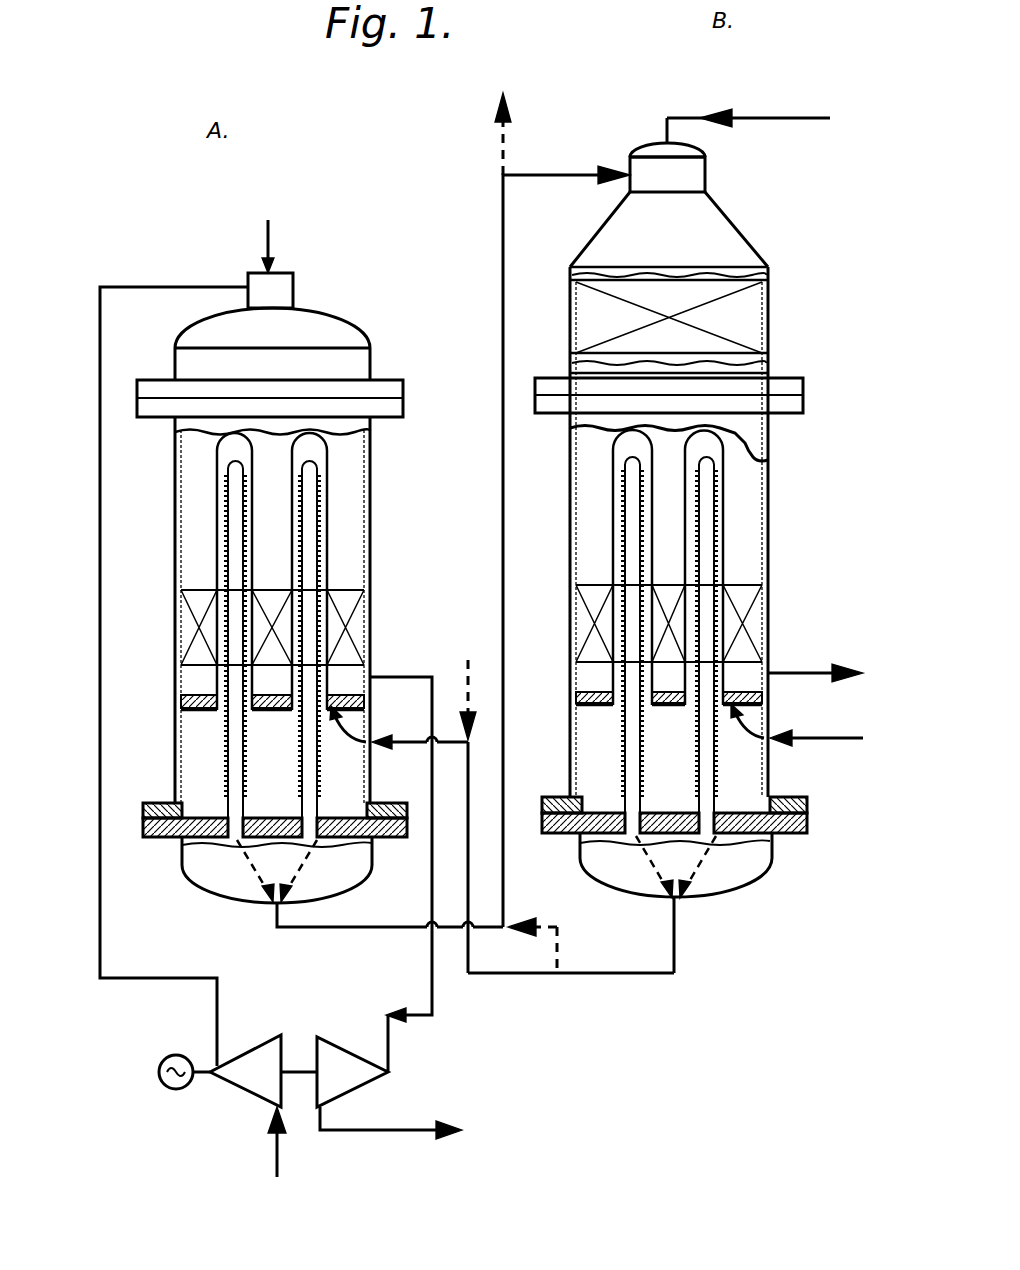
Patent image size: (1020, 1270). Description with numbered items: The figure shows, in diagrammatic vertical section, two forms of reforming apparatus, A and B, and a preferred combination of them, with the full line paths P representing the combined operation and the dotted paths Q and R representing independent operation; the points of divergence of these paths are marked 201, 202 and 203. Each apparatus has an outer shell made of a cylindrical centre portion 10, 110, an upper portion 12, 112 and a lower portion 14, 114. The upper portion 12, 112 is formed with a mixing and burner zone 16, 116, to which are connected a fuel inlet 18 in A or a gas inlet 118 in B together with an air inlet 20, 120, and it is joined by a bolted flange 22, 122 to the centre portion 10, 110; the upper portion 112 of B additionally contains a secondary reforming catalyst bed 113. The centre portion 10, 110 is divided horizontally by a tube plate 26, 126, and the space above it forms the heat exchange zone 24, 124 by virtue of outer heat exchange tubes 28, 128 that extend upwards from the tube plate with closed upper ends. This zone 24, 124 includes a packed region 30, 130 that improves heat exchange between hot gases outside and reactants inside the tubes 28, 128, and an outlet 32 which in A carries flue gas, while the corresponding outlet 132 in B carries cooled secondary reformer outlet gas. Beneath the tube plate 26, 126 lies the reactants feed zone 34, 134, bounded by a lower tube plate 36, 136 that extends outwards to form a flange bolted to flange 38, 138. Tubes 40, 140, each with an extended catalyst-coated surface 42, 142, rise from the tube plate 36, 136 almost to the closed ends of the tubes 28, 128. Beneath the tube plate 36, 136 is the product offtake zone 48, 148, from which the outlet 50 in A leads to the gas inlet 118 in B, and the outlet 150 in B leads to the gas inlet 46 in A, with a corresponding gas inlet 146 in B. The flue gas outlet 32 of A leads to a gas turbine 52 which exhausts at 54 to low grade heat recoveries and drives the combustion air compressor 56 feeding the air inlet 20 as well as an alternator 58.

The cylindrical centre portion 10 is at (358, 440).
The upper portion 12 is at (372, 348).
The lower portion 14 is at (372, 855).
The mixing and burner zone 16 is at (296, 290).
The fuel inlet 18 is at (282, 232).
The air inlet 20 is at (190, 286).
The flange 22 is at (404, 385).
The heat exchange zone 24 is at (363, 440).
The tube plate 26 is at (190, 694).
The outer heat exchange tubes 28 is at (300, 462).
The packed region 30 is at (355, 610).
The outlet 32 is at (395, 676).
The reactants feed zone 34 is at (265, 752).
The tube plate 36 is at (152, 840).
The flange 38 is at (148, 806).
The tubes 40 is at (235, 520).
The extended catalyst-coated surface 42 is at (322, 555).
The gas inlet 46 is at (400, 740).
The product offtake zone 48 is at (330, 882).
The outlet 50 is at (320, 930).
The gas turbine 52 is at (380, 1082).
The exhaust 54 is at (420, 1135).
The combustion air compressor 56 is at (245, 1092).
The alternator 58 is at (162, 1086).
The cylindrical centre portion 110 is at (768, 490).
The upper portion 112 is at (730, 220).
The secondary reforming catalyst bed 113 is at (720, 285).
The lower portion 114 is at (780, 856).
The mixing and burner zone 116 is at (695, 178).
The gas inlet 118 is at (552, 174).
The air inlet 120 is at (770, 117).
The flange 122 is at (804, 378).
The heat exchange zone 124 is at (752, 482).
The tube plate 126 is at (590, 686).
The outer heat exchange tubes 128 is at (710, 453).
The packed region 130 is at (752, 625).
The outlet 132 is at (805, 672).
The reactants feed zone 134 is at (683, 752).
The tube plate 136 is at (808, 820).
The flange 138 is at (808, 800).
The tubes 140 is at (630, 505).
The extended catalyst-coated surface 142 is at (717, 570).
The gas inlet 146 is at (848, 745).
The product offtake zone 148 is at (720, 880).
The outlet 150 is at (690, 970).
The point of divergence 201 is at (571, 962).
The point of divergence 202 is at (472, 742).
The point of divergence 203 is at (500, 176).